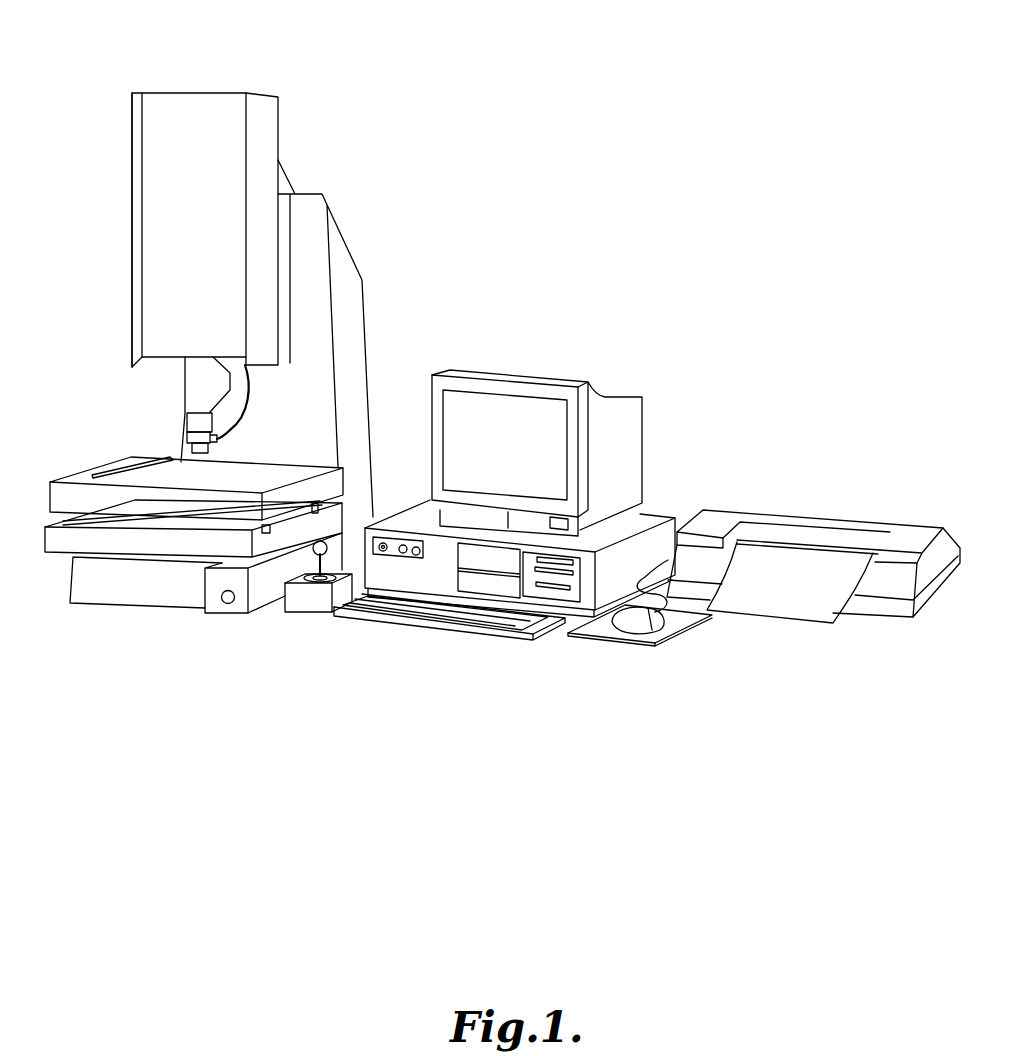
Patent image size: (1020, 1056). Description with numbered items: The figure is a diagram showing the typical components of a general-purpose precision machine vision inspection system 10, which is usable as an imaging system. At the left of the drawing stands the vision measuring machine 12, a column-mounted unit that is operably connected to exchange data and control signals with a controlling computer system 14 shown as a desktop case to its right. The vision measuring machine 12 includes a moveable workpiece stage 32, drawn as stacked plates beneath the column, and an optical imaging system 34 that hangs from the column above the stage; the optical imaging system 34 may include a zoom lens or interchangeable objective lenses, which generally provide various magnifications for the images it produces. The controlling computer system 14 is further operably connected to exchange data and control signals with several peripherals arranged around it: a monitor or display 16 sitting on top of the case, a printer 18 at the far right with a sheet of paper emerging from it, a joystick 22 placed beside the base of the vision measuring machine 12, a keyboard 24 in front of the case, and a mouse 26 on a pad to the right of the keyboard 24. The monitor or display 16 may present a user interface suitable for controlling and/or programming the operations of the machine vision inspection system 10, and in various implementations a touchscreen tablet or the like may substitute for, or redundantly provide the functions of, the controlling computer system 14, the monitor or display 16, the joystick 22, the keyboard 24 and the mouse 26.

The machine vision inspection system 10 is at (648, 162).
The vision measuring machine 12 is at (192, 92).
The controlling computer system 14 is at (647, 515).
The monitor or display 16 is at (518, 372).
The printer 18 is at (823, 517).
The joystick 22 is at (310, 613).
The keyboard 24 is at (430, 628).
The mouse 26 is at (645, 622).
The moveable workpiece stage 32 is at (102, 463).
The optical imaging system 34 is at (186, 359).